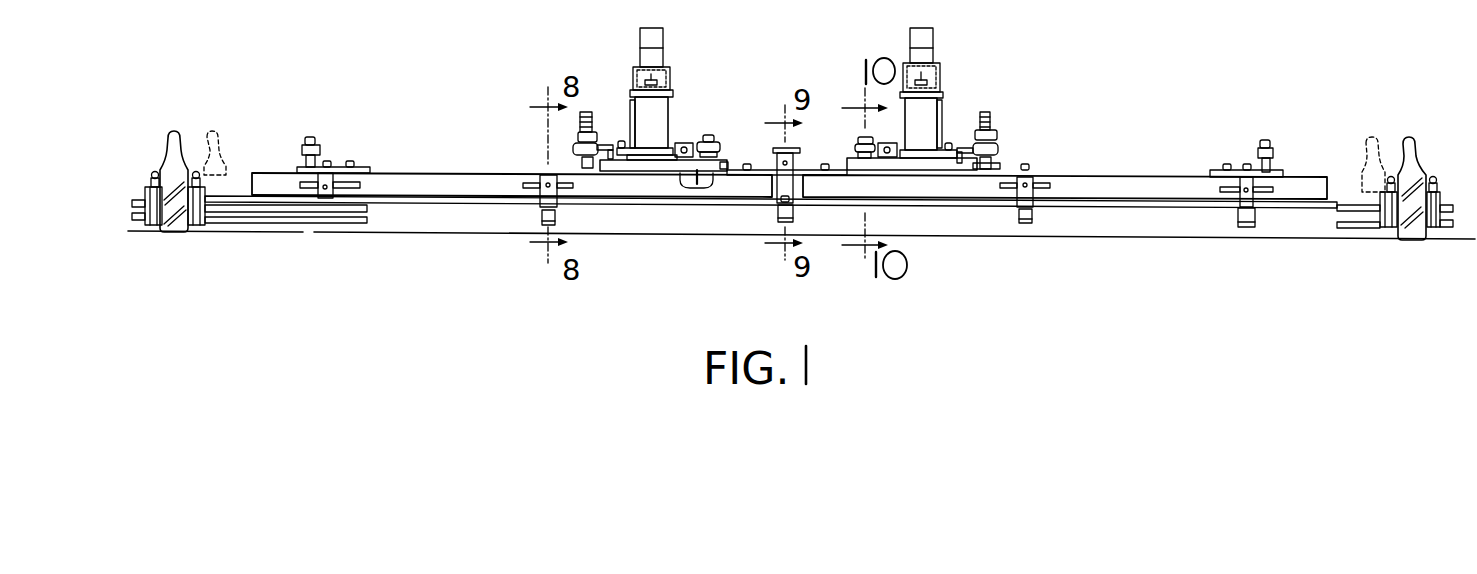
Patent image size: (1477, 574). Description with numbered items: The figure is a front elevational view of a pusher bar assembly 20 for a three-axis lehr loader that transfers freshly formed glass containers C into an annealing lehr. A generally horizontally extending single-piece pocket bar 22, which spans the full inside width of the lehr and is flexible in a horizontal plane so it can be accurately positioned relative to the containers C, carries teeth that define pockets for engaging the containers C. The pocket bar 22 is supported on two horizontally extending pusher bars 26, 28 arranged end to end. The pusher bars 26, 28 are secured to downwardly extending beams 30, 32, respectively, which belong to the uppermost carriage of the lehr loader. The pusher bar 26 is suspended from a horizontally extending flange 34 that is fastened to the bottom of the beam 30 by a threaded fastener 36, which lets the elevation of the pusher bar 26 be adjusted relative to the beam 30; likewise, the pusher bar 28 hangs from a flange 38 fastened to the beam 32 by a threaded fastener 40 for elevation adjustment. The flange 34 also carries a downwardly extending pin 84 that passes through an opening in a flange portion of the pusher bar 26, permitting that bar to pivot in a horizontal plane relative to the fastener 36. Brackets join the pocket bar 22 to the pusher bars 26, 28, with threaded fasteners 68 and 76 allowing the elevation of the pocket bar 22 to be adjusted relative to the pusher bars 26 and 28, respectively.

The pusher bar assembly 20 is at (1104, 97).
The pocket bar 22 is at (1337, 205).
The pusher bar 26 is at (438, 172).
The pusher bar 28 is at (1138, 180).
The beam 30 is at (668, 122).
The beam 32 is at (943, 120).
The flange 34 is at (665, 172).
The threaded fastener 36 is at (588, 110).
The flange 38 is at (933, 167).
The threaded fastener 40 is at (991, 120).
The threaded fastener 68 is at (311, 137).
The threaded fastener 76 is at (1279, 170).
The pin 84 is at (697, 174).
The glass containers C is at (171, 136).